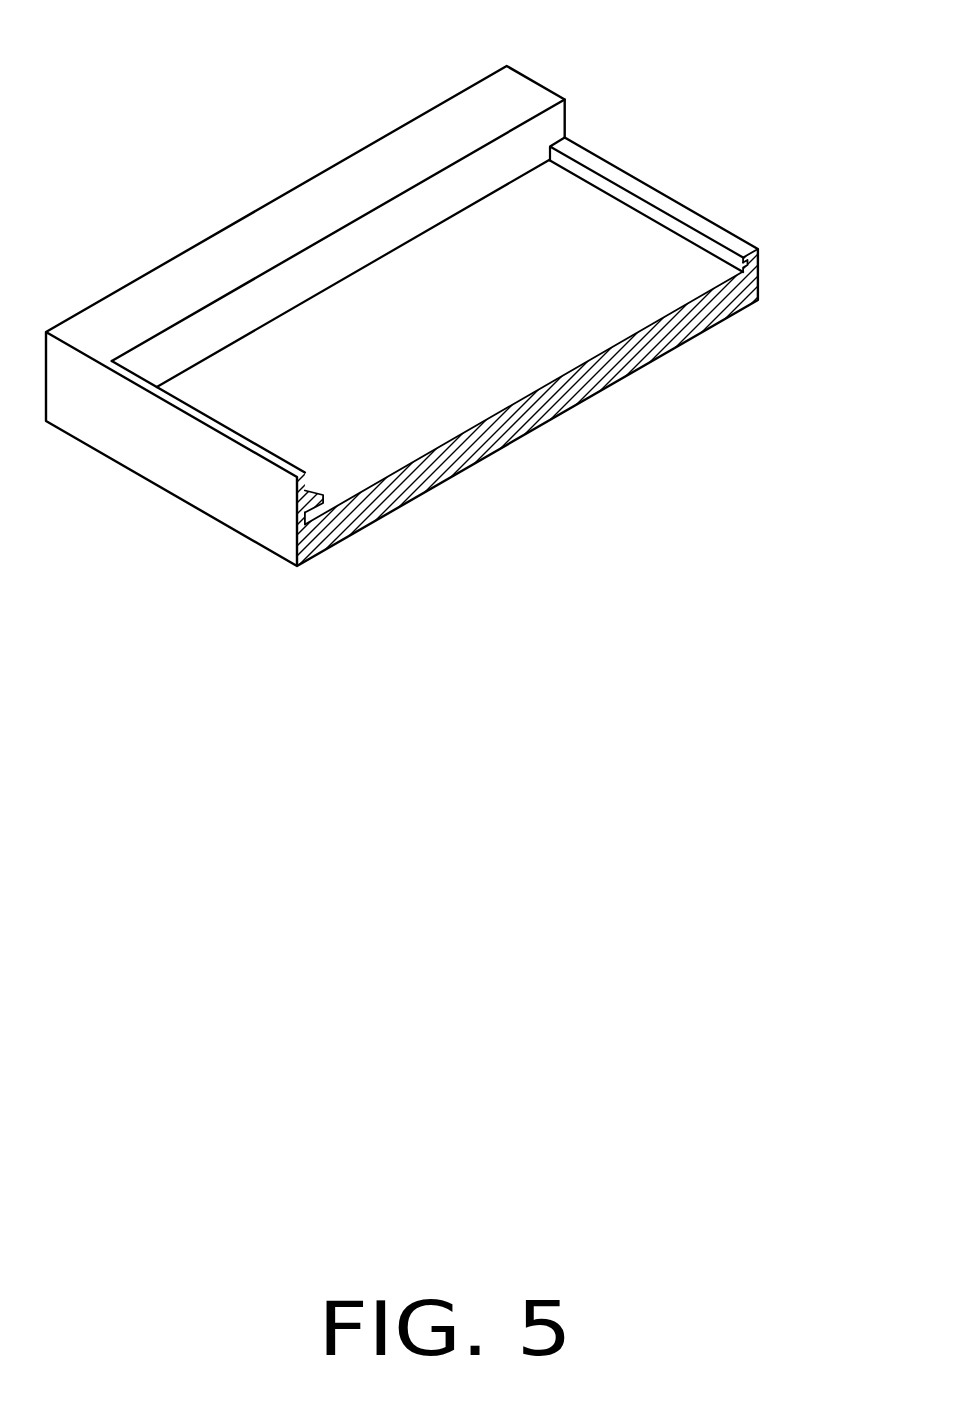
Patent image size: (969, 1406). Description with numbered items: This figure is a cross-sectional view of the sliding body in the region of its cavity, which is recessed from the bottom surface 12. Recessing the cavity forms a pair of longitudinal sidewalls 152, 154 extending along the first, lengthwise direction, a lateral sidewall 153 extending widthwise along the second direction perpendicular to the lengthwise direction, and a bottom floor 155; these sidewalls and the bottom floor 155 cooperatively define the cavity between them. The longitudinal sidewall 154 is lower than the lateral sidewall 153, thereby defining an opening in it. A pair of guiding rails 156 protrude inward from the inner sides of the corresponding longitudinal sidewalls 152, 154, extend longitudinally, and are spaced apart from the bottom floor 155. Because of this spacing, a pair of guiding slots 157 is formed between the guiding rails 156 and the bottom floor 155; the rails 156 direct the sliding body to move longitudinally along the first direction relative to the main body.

The bottom surface 12 is at (283, 232).
The longitudinal sidewall 152 is at (203, 455).
The lateral sidewall 153 is at (506, 160).
The longitudinal sidewall 154 is at (758, 252).
The bottom floor 155 is at (477, 348).
The guiding rail 156 is at (668, 205).
The guiding slot 157 is at (758, 276).